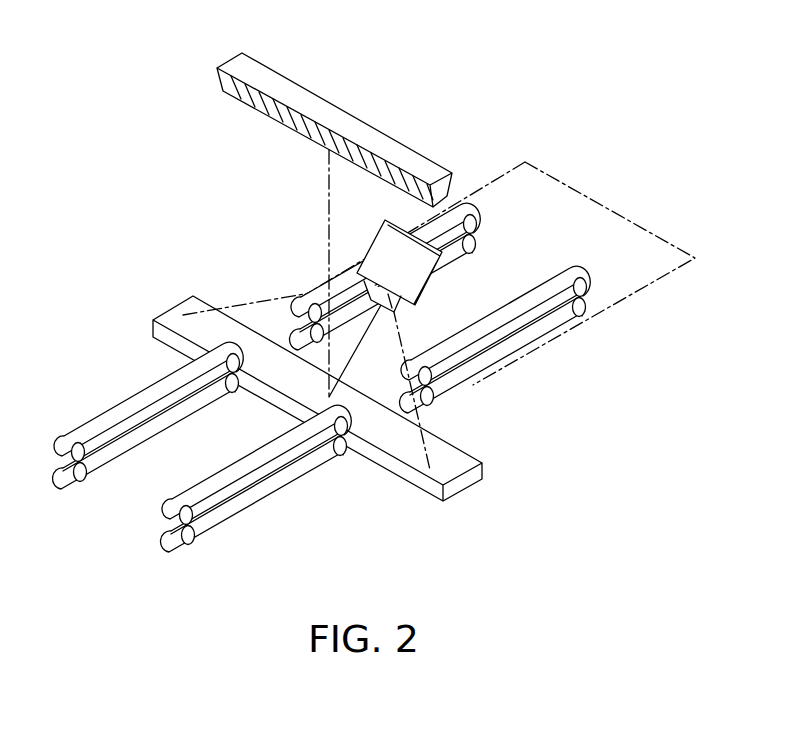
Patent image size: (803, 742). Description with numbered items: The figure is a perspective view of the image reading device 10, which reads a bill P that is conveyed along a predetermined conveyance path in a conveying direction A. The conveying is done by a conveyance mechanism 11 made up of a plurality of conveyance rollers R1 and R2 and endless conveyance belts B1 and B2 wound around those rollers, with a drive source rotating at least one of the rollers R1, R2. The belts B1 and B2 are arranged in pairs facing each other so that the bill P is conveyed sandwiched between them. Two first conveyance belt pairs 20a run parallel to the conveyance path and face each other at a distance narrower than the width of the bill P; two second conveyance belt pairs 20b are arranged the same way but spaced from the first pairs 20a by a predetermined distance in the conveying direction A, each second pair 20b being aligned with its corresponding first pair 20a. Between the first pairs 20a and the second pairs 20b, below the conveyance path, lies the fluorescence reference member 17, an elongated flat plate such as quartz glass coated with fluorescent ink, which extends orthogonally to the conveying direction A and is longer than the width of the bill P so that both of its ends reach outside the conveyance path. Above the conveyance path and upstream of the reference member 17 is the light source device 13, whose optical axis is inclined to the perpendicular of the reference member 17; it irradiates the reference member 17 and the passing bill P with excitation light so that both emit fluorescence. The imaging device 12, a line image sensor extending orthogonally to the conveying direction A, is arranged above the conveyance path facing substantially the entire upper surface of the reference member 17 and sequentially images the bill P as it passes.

The image reading device 10 is at (491, 94).
The conveyance mechanism 11 is at (297, 292).
The imaging device 12 is at (308, 106).
The light source device 13 is at (429, 285).
The fluorescence reference member 17 is at (397, 450).
The first conveyance belt pairs 20a is at (343, 275).
The second conveyance belt pairs 20b is at (118, 390).
The conveyance belt B1 is at (92, 428).
The conveyance belt B2 is at (122, 446).
The conveyance roller R1 is at (238, 393).
The conveyance roller R2 is at (76, 462).
The conveying direction A is at (364, 355).
The bill P is at (586, 210).